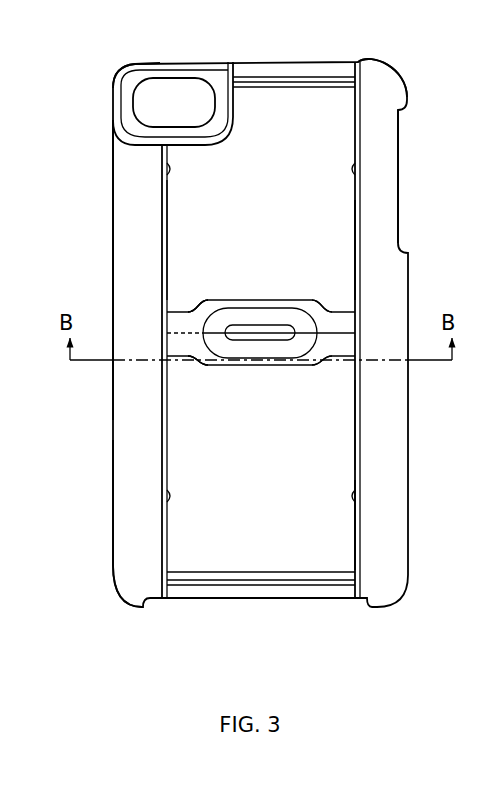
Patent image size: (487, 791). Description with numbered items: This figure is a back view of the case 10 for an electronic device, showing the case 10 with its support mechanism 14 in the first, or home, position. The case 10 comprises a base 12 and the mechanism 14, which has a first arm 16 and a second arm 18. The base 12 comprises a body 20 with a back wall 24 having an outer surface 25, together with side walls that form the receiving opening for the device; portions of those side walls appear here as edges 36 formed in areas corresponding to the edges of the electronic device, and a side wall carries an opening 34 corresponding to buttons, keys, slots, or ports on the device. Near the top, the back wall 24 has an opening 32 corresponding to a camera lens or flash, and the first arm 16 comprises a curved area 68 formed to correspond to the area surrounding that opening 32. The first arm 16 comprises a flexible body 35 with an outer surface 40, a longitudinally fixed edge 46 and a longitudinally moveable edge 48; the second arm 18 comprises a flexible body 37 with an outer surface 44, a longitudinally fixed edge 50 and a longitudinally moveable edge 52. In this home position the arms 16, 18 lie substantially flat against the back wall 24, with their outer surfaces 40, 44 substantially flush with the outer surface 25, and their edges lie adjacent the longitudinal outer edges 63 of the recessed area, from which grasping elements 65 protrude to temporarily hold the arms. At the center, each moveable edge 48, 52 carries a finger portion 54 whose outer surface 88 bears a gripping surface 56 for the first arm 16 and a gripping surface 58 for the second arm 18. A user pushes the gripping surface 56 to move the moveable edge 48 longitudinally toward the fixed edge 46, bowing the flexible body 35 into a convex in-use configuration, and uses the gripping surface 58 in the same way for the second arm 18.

The case 10 is at (76, 136).
The base 12 is at (110, 210).
The support mechanism 14 is at (153, 341).
The first arm 16 is at (338, 190).
The second arm 18 is at (357, 437).
The body 20 is at (122, 272).
The back wall 24 is at (124, 542).
The outer surface 25 is at (132, 585).
The opening 32 is at (214, 127).
The opening 34 is at (404, 137).
The flexible body 35 is at (357, 246).
The edge 36 is at (130, 68).
The flexible body 37 is at (357, 533).
The outer surface 40 is at (281, 229).
The outer surface 44 is at (288, 549).
The longitudinally fixed edge 46 is at (330, 78).
The longitudinally moveable edge 48 is at (181, 340).
The longitudinally fixed edge 50 is at (330, 580).
The longitudinally moveable edge 52 is at (340, 326).
The finger portion 54 is at (322, 307).
The gripping surface 56 is at (255, 308).
The gripping surface 58 is at (266, 362).
The outer edge 63 is at (172, 232).
The grasping element 65 is at (168, 168).
The curved area 68 is at (227, 108).
The outer surface 88 is at (200, 317).